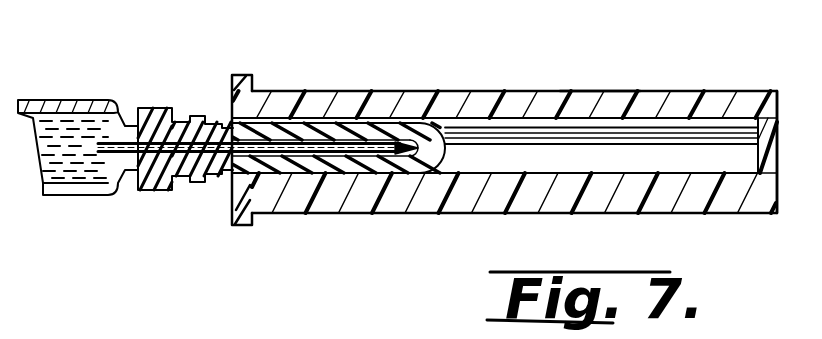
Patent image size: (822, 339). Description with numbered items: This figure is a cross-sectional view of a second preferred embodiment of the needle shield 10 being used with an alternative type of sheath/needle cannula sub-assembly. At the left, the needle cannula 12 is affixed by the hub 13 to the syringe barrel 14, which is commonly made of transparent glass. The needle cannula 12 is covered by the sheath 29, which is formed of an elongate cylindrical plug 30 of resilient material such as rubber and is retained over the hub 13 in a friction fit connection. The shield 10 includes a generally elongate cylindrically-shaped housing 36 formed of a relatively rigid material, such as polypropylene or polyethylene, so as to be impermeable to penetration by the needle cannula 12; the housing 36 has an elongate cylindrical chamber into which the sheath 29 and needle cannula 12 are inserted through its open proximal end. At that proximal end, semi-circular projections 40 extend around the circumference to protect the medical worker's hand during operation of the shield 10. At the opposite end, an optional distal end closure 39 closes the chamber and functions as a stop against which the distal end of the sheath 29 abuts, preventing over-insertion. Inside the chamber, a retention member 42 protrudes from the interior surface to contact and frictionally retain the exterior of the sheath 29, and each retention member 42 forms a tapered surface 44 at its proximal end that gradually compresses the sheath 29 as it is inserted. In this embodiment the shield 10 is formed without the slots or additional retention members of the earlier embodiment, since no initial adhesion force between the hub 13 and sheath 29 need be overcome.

The needle shield 10 is at (479, 86).
The needle cannula 12 is at (326, 185).
The hub 13 is at (155, 205).
The syringe barrel 14 is at (76, 205).
The sheath 29 is at (392, 178).
The elongate cylindrical plug 30 is at (358, 98).
The housing 36 is at (596, 87).
The distal end closure 39 is at (772, 139).
The semi-circular projections 40 is at (243, 76).
The retention member 42 is at (662, 145).
The tapered surface 44 is at (256, 204).